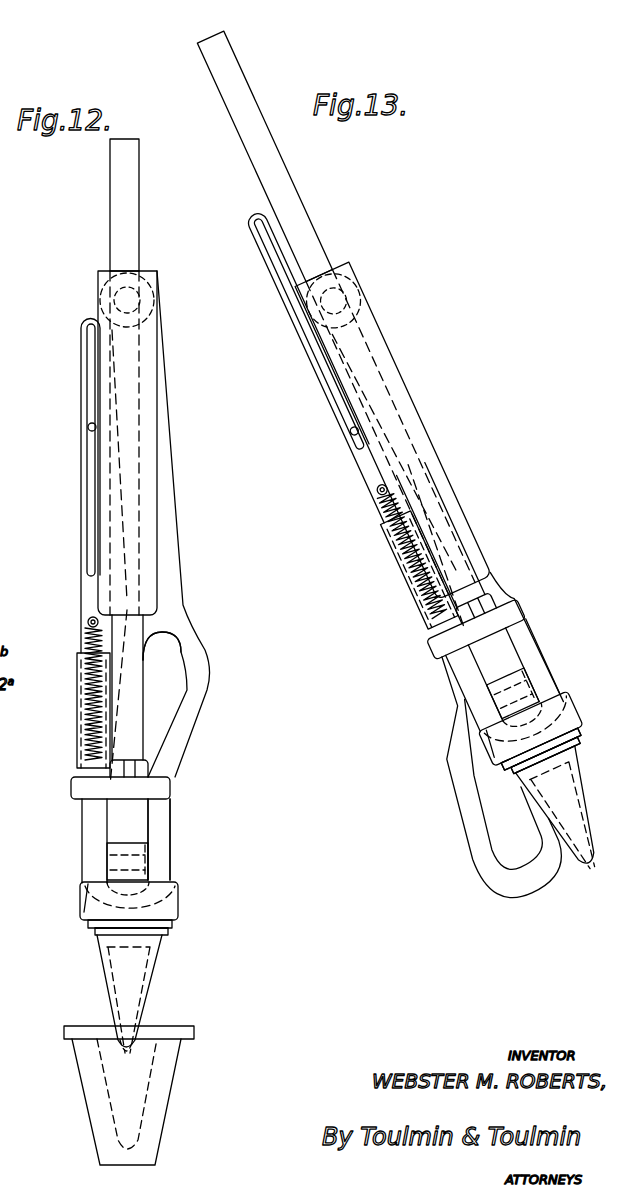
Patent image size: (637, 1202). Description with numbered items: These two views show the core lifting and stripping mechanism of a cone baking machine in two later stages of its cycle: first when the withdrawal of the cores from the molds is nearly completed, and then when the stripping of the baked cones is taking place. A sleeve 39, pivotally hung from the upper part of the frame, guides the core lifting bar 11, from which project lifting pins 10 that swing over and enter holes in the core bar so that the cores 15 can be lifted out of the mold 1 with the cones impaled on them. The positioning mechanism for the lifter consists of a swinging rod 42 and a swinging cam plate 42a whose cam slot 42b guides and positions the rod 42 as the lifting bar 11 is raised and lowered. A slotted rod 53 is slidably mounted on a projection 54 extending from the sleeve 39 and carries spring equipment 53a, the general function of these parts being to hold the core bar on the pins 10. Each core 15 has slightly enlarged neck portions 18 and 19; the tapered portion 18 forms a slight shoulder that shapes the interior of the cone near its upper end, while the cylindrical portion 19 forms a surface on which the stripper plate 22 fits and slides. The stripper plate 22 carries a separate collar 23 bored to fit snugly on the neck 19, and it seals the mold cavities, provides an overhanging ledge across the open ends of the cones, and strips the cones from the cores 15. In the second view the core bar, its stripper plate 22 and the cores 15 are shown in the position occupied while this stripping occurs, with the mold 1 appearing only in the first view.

In FIG. 12, the mold 1 is at (88, 1098).
In FIG. 12, the lifting pins 10 is at (152, 853).
In FIG. 13, the lifting pins 10 is at (547, 647).
In FIG. 12, the core lifting bar 11 is at (160, 788).
In FIG. 13, the core lifting bar 11 is at (502, 622).
In FIG. 12, the cores 15 is at (143, 982).
In FIG. 13, the cores 15 is at (570, 877).
In FIG. 13, the neck portion 18 is at (544, 758).
In FIG. 13, the neck portion 19 is at (547, 755).
In FIG. 12, the stripper plate 22 is at (173, 925).
In FIG. 13, the stripper plate 22 is at (570, 762).
In FIG. 12, the collar 23 is at (97, 930).
In FIG. 13, the collar 23 is at (522, 798).
In FIG. 12, the sleeves 39 is at (149, 375).
In FIG. 13, the sleeves 39 is at (407, 405).
In FIG. 12, the swinging rods 42 is at (157, 878).
In FIG. 13, the swinging rods 42 is at (483, 848).
In FIG. 12, the cam plate 42a is at (197, 702).
In FIG. 13, the cam plate 42a is at (452, 683).
In FIG. 12, the cam slot 42b is at (180, 648).
In FIG. 13, the cam slot 42b is at (540, 622).
In FIG. 12, the slotted rod 53 is at (81, 355).
In FIG. 13, the slotted rod 53 is at (258, 250).
In FIG. 12, the spring equipment 53a is at (87, 641).
In FIG. 13, the spring equipment 53a is at (405, 511).
In FIG. 12, the projection 54 is at (88, 427).
In FIG. 13, the projection 54 is at (348, 428).